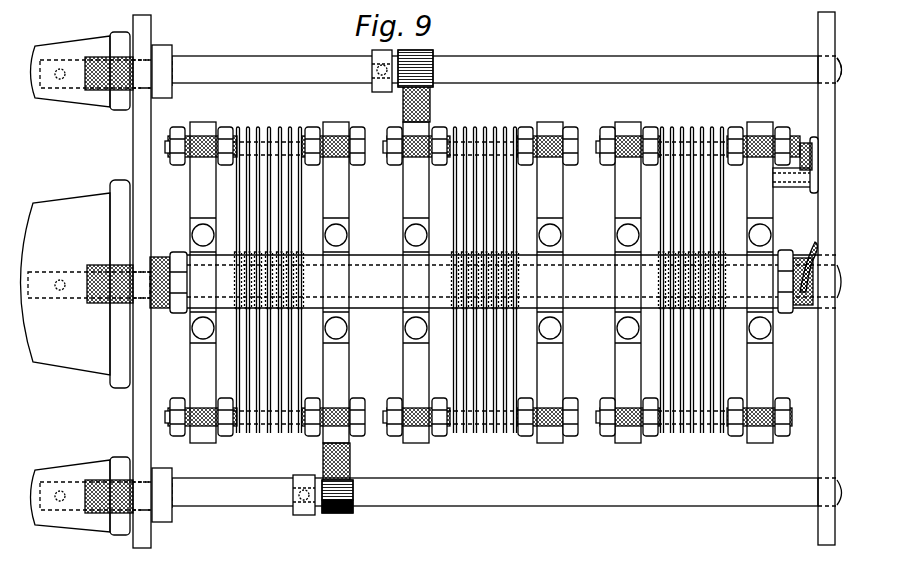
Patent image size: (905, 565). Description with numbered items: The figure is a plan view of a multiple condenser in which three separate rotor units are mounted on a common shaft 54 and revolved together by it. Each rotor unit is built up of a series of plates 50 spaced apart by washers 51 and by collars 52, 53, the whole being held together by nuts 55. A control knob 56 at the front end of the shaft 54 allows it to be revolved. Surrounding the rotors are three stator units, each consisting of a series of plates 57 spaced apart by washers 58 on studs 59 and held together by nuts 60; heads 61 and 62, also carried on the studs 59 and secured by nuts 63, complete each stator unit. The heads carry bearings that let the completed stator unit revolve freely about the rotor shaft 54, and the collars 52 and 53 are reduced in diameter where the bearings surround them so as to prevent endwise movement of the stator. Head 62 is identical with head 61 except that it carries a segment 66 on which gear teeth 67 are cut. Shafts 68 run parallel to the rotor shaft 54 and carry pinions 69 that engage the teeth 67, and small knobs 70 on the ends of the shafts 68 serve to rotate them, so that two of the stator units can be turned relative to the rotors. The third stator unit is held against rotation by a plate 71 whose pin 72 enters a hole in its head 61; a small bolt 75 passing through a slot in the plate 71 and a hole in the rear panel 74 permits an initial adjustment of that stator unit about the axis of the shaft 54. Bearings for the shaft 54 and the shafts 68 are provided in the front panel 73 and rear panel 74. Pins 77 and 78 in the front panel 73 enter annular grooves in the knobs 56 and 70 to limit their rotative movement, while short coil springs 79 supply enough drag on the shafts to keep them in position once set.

The plates 50 is at (260, 254).
The washers 51 is at (292, 254).
The collar 52 is at (186, 252).
The collar 53 is at (373, 256).
The shaft 54 is at (376, 298).
The nuts 55 is at (166, 257).
The control knob 56 is at (90, 197).
The plates 57 is at (258, 437).
The washers 58 is at (287, 440).
The studs 59 is at (202, 427).
The nuts 60 is at (230, 437).
The head 61 is at (190, 380).
The head 62 is at (403, 375).
The nuts 63 is at (180, 437).
The segment 66 is at (430, 103).
The gear teeth 67 is at (402, 88).
The shafts 68 is at (555, 75).
The pinions 69 is at (447, 48).
The small knobs 70 is at (80, 103).
The plate 71 is at (815, 134).
The pin 72 is at (797, 190).
The front panel 73 is at (152, 37).
The rear panel 74 is at (818, 32).
The small bolt 75 is at (802, 143).
The pin 77 is at (143, 292).
The pin 78 is at (142, 82).
The coil springs 79 is at (108, 63).